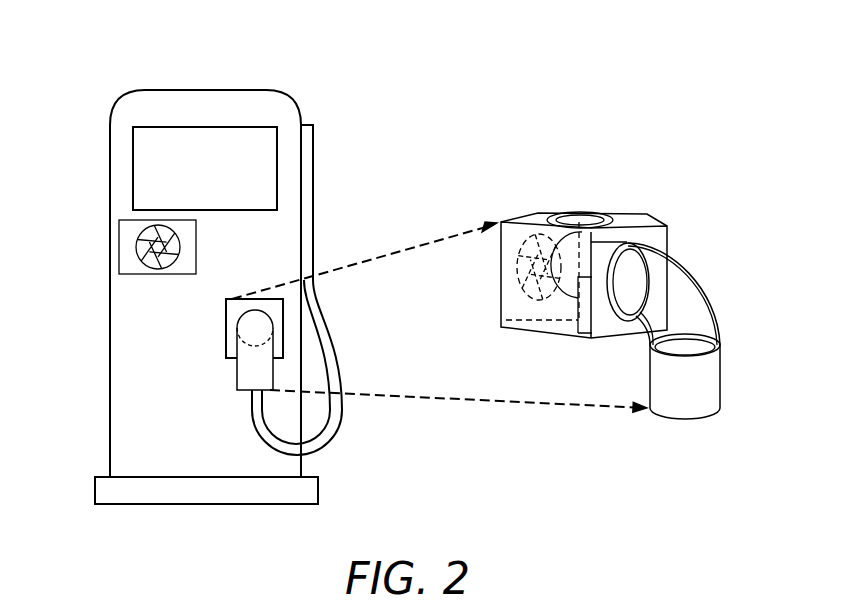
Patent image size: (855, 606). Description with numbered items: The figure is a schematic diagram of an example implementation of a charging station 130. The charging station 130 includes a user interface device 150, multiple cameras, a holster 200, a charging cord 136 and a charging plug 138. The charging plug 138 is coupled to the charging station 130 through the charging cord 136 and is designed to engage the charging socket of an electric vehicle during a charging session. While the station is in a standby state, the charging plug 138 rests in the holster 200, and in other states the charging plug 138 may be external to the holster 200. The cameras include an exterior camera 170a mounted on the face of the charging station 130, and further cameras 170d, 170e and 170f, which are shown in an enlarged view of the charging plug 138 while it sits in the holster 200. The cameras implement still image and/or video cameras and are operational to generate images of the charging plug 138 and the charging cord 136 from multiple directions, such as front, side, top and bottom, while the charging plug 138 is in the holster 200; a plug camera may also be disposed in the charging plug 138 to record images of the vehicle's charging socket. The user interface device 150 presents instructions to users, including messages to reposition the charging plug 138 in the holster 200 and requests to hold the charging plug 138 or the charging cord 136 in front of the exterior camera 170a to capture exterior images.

The charging station 130 is at (195, 90).
The user interface device 150 is at (133, 176).
The exterior camera 170a is at (137, 263).
The charging cord 136 is at (316, 207).
The holster 200 is at (226, 333).
The charging plug 138 is at (259, 358).
The camera 170d is at (530, 267).
The camera 170e is at (605, 220).
The camera 170f is at (625, 237).